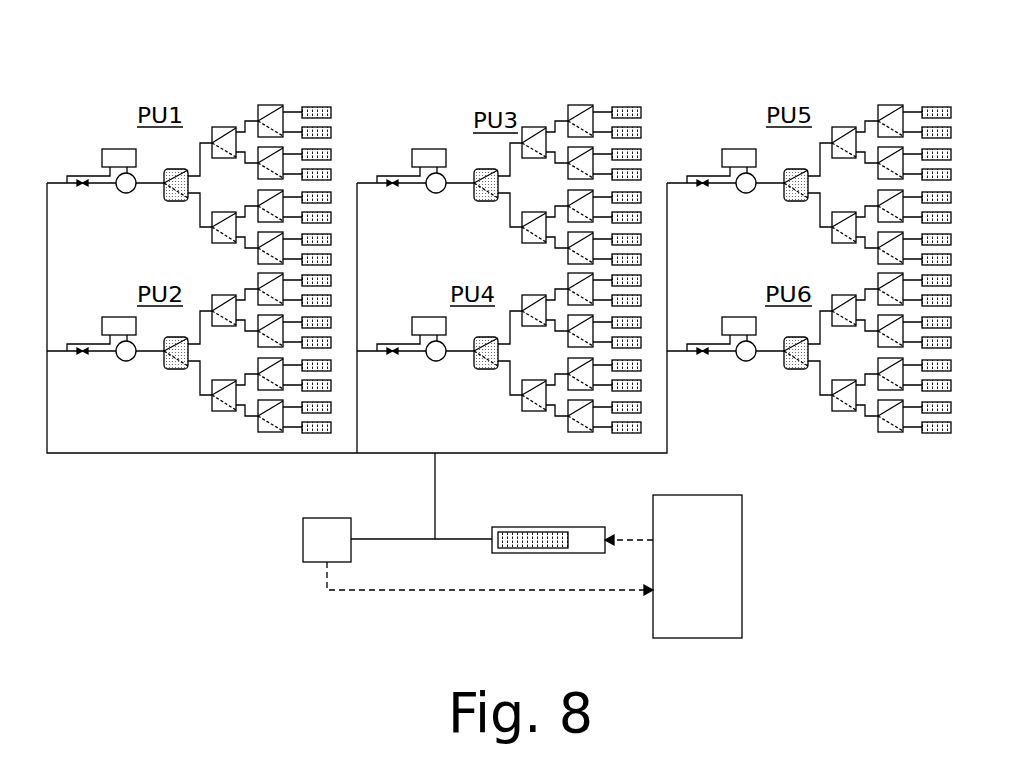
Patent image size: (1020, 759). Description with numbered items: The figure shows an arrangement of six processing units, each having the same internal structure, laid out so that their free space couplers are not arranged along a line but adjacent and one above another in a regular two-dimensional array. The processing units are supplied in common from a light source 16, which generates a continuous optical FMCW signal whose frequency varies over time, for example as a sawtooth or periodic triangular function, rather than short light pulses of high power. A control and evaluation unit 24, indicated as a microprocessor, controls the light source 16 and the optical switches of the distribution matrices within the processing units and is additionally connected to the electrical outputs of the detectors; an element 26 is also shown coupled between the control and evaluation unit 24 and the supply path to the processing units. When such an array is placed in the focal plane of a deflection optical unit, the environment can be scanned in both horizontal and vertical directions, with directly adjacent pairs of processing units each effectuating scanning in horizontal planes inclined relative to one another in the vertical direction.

The light source 16 is at (573, 531).
The control and evaluation unit 24 is at (734, 536).
The flow sensor / pump unit 26 is at (310, 544).